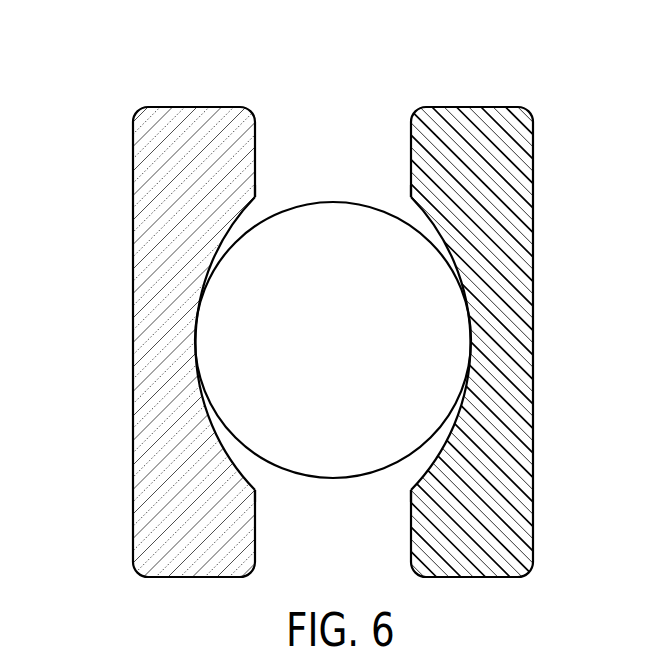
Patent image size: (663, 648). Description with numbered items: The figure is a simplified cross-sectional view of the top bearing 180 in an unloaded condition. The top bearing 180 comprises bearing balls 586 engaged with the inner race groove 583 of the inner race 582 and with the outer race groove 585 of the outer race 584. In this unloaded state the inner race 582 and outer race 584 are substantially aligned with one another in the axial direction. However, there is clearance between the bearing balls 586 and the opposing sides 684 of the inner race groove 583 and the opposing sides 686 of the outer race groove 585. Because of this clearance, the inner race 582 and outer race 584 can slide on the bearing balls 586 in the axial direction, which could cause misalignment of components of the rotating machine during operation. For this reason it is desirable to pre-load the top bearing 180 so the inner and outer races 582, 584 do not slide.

The top bearing 180 is at (87, 80).
The inner race 582 is at (155, 205).
The inner race groove 583 is at (210, 440).
The outer race 584 is at (510, 447).
The outer race groove 585 is at (460, 272).
The bearing balls 586 is at (328, 204).
The opposing sides of inner race groove 684 is at (243, 210).
The opposing sides of outer race groove 686 is at (412, 197).